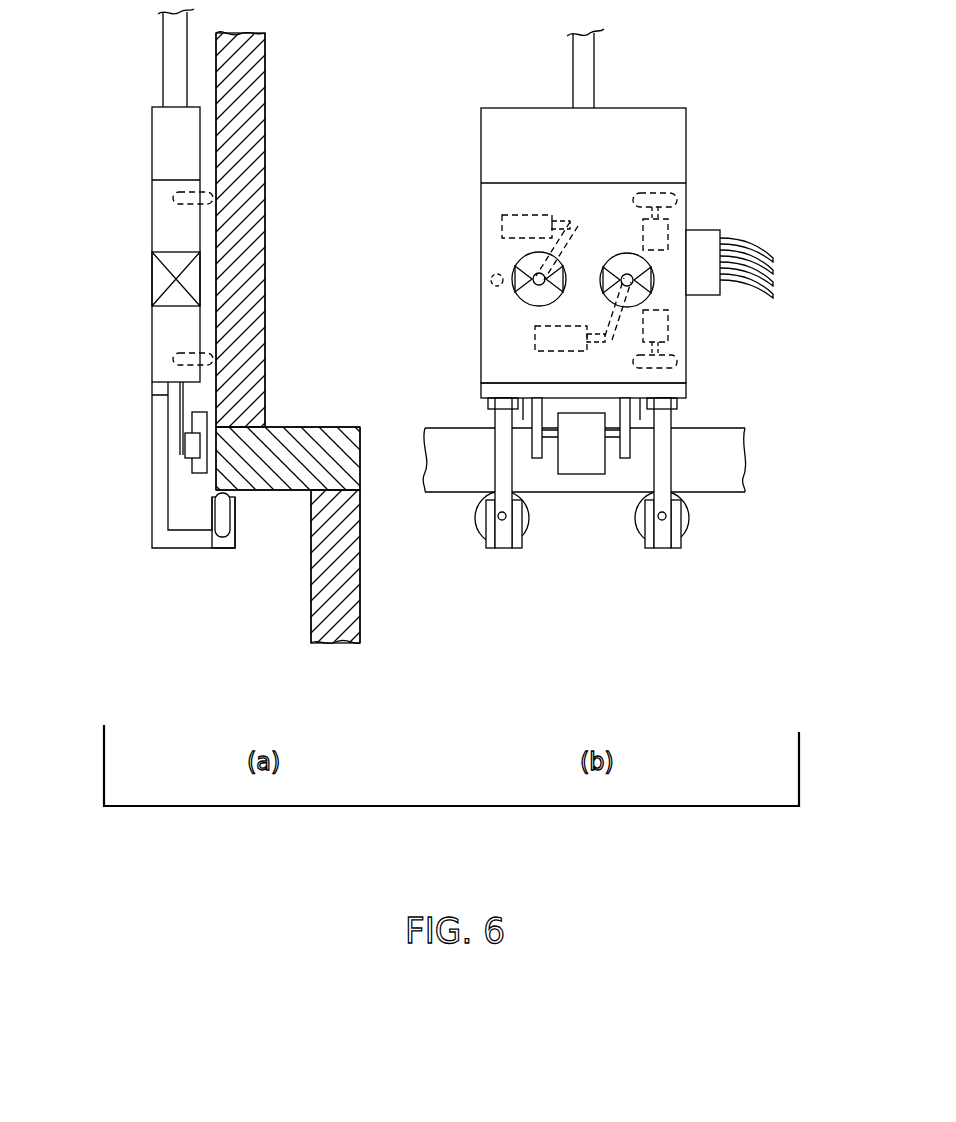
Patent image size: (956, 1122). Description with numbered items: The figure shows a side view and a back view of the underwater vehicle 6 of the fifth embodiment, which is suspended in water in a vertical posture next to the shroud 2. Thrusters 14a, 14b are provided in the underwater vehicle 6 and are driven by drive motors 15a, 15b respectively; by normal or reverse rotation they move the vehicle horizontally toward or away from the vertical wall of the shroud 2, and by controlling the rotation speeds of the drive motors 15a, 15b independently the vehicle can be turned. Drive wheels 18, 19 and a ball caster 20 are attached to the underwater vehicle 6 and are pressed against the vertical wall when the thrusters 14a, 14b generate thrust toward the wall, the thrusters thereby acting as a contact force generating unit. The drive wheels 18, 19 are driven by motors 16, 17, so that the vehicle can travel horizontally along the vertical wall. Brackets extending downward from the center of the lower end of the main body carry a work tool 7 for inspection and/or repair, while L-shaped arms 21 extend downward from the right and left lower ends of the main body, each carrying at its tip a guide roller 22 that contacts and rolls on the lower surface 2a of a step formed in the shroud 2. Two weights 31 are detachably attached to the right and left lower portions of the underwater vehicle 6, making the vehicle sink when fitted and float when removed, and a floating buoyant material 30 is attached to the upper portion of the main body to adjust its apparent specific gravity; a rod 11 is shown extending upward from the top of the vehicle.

The shroud 2 is at (250, 113).
The lower surface of step 2a is at (283, 495).
The underwater vehicle 6 is at (126, 231).
The work tool 7 is at (200, 420).
The support rod 11 is at (187, 16).
The thruster 14a is at (533, 293).
The thruster 14b is at (165, 272).
The drive motor 15a is at (500, 222).
The drive motor 15b is at (533, 338).
The motor 16 is at (668, 222).
The motor 17 is at (668, 318).
The drive wheel 18 is at (215, 197).
The drive wheel 19 is at (215, 358).
The ball caster 20 is at (494, 278).
The L-shaped arm 21 is at (162, 510).
The guide roller 22 is at (222, 515).
The floating buoyant material 30 is at (172, 128).
The weight 31 is at (492, 402).